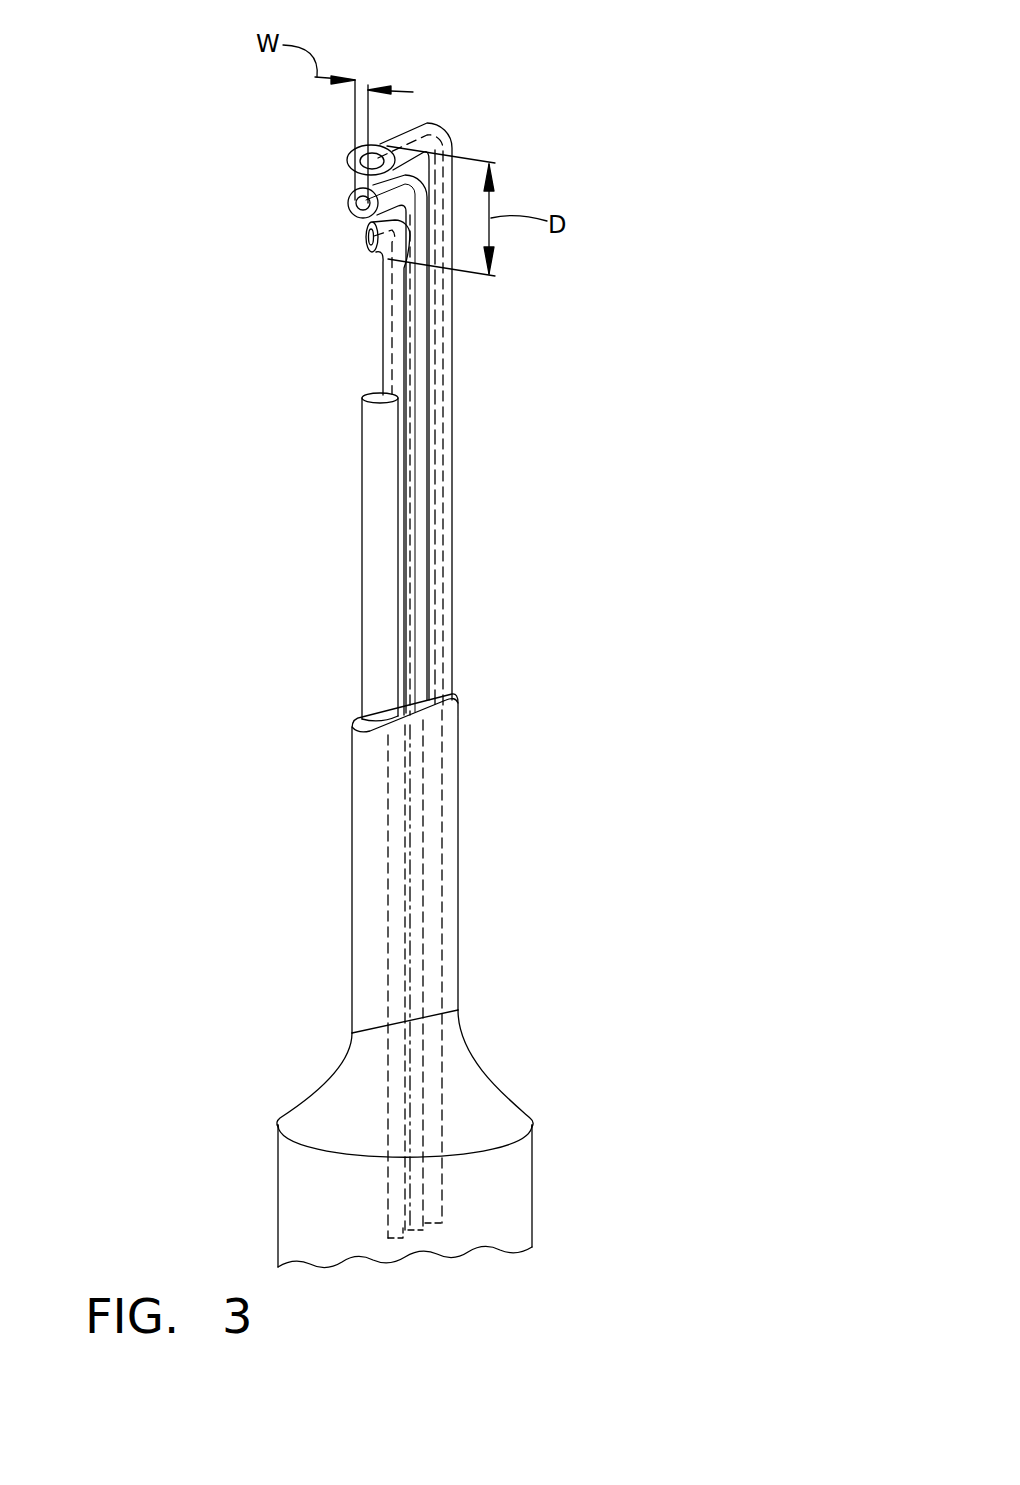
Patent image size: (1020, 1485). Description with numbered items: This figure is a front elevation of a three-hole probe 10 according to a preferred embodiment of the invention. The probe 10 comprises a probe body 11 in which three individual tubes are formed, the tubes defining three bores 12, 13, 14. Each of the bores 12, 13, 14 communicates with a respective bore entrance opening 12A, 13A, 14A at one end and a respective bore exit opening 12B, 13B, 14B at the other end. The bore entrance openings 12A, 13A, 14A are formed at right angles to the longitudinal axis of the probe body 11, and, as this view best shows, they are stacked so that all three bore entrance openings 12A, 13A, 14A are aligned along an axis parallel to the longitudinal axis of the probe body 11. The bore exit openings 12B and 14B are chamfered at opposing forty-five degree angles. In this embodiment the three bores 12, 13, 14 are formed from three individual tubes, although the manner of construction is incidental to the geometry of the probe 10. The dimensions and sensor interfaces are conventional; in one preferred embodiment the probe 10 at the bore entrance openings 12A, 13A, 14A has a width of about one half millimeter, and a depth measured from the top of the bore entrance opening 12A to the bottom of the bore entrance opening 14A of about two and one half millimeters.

The 3-hole probe 10 is at (228, 133).
The probe body 11 is at (450, 472).
The bore 12 is at (447, 358).
The bore entrance opening 12A is at (387, 143).
The bore exit opening 12B is at (433, 1230).
The bore 13 is at (418, 308).
The bore entrance opening 13A is at (349, 205).
The bore exit opening 13B is at (416, 1240).
The bore 14 is at (392, 342).
The bore entrance opening 14A is at (366, 241).
The bore exit opening 14B is at (393, 1247).